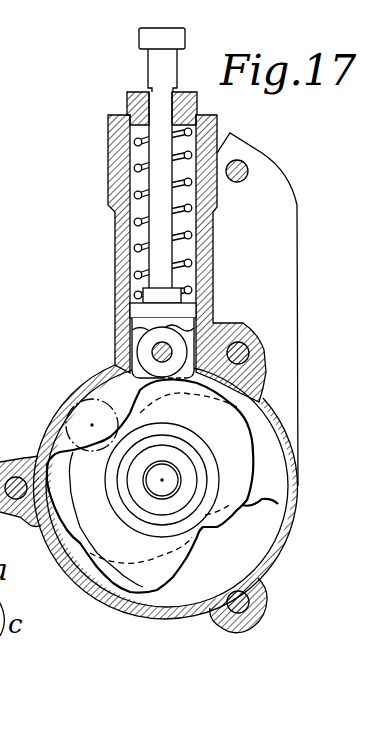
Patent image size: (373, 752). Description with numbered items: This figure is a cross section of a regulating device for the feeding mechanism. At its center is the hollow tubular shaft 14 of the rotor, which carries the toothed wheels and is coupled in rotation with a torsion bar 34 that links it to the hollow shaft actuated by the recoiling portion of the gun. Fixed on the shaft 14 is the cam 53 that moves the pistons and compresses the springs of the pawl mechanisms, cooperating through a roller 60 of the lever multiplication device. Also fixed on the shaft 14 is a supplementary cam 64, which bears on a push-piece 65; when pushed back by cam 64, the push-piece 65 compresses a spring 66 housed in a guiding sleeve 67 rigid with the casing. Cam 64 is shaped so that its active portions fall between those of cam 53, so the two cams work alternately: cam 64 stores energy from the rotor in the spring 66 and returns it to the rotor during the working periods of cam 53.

The guiding sleeve 67 is at (121, 207).
The spring 66 is at (134, 249).
The push-piece 65 is at (130, 325).
The supplementary cam 64 is at (158, 393).
The roller 60 is at (68, 420).
The cam 53 is at (68, 460).
The tubular shaft 14 is at (182, 460).
The torsion bar 34 is at (170, 488).